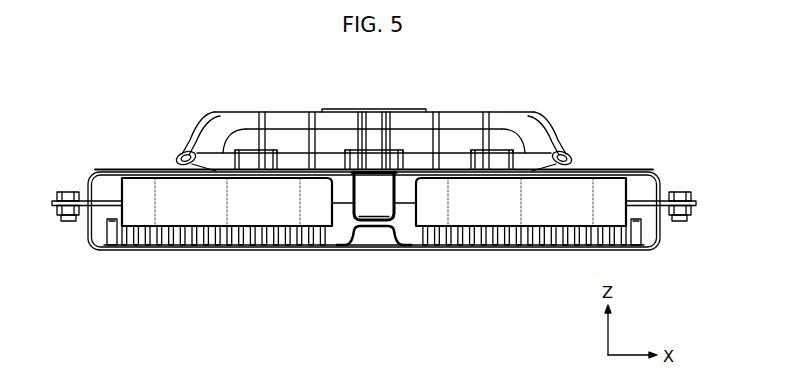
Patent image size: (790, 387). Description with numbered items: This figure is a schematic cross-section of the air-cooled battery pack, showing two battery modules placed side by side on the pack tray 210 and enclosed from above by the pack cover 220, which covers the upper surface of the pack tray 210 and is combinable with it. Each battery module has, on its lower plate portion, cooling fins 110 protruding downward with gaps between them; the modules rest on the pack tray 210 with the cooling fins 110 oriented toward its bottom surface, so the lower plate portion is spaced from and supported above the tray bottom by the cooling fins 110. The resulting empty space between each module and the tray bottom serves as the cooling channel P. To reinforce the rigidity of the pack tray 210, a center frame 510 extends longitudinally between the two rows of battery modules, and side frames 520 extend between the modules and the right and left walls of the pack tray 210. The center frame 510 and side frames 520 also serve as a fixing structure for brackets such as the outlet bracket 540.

The pack cover 220 is at (112, 170).
The outlet bracket 540 is at (118, 193).
The side frame 520 is at (105, 220).
The pack tray 210 is at (110, 250).
The cooling channel P is at (196, 241).
The cooling fins 110 is at (258, 250).
The center frame 510 is at (348, 247).